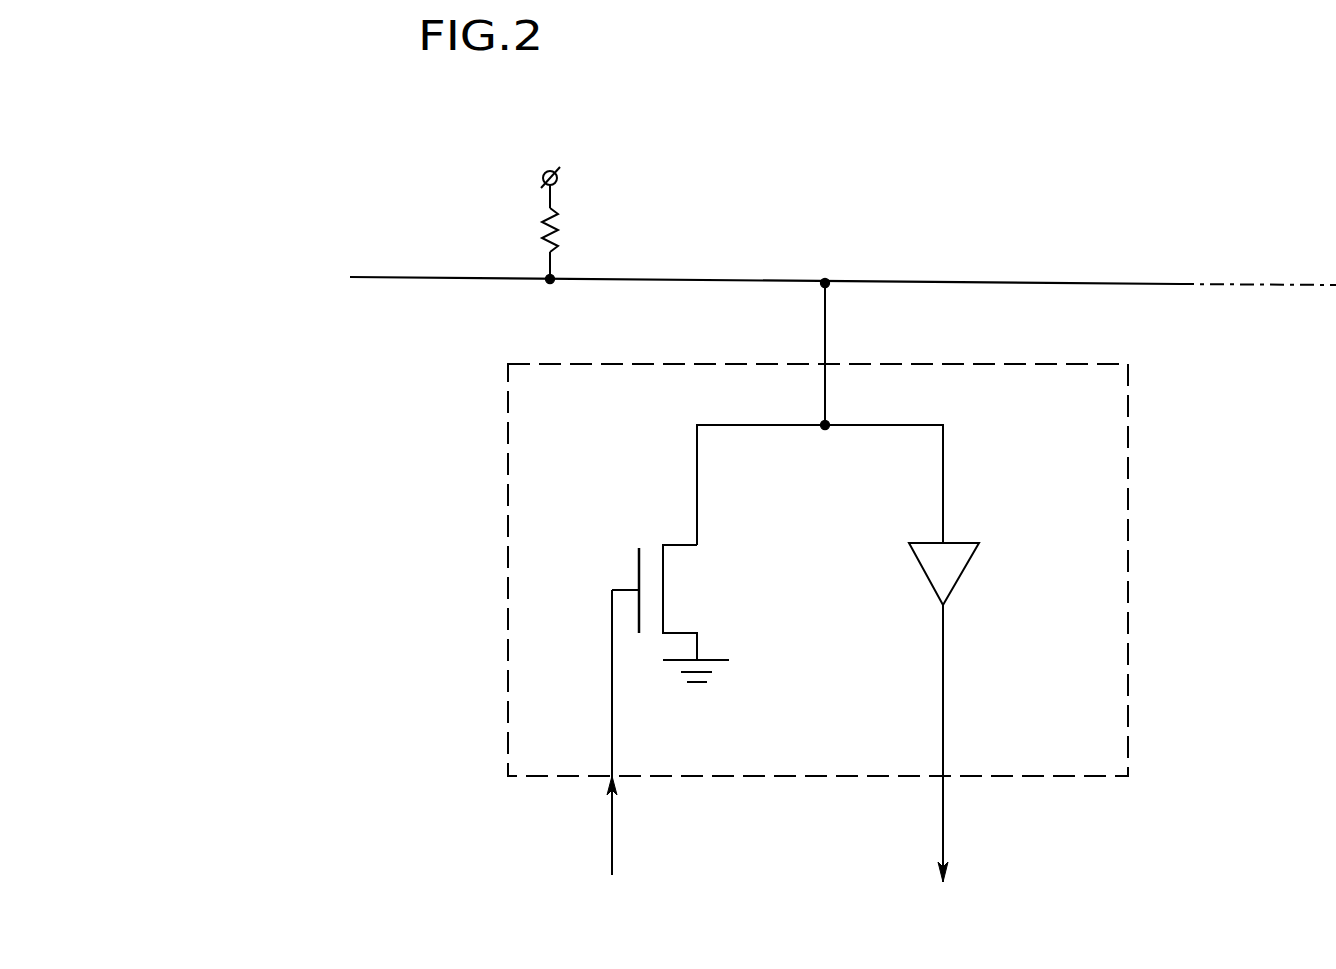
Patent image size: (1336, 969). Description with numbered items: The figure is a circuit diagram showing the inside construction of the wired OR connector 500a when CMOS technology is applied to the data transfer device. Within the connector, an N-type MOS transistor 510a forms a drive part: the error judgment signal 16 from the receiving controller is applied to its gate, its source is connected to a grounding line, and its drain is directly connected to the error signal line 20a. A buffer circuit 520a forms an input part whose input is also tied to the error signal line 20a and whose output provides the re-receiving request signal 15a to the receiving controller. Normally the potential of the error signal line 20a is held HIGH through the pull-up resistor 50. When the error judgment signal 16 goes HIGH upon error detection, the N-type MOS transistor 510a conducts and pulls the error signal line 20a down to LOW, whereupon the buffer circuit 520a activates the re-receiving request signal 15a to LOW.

The pull-up resistor 50 is at (558, 211).
The error signal line 20a is at (380, 278).
The wired OR connector 500a is at (1018, 364).
The N-type MOS transistor 510a is at (637, 557).
The buffer circuit 520a is at (966, 568).
The error judgment signal 16 is at (610, 836).
The re-receiving request signal 15a is at (943, 833).